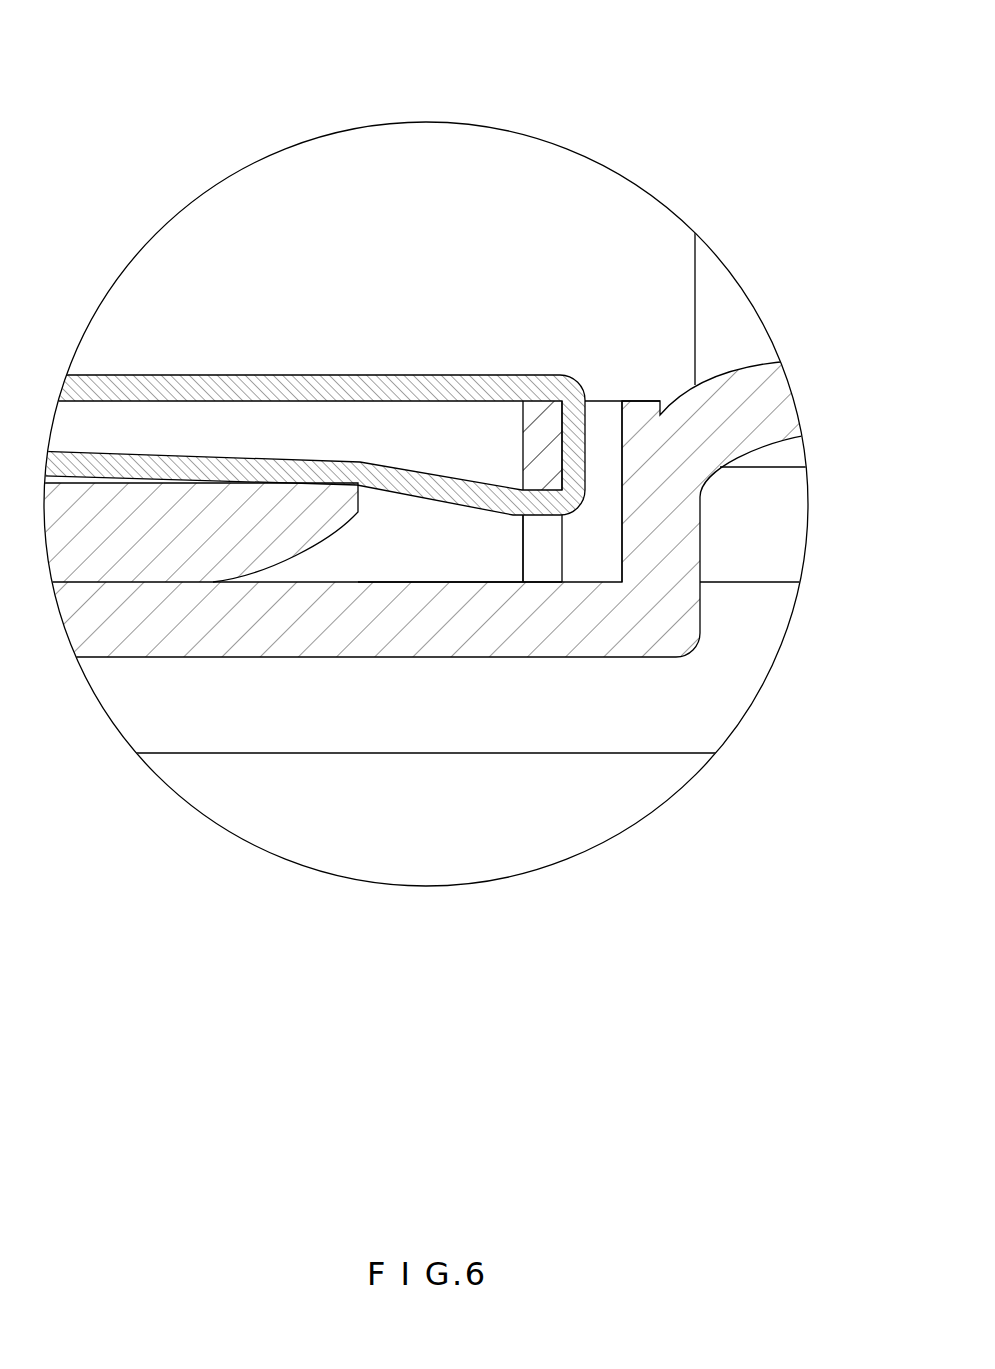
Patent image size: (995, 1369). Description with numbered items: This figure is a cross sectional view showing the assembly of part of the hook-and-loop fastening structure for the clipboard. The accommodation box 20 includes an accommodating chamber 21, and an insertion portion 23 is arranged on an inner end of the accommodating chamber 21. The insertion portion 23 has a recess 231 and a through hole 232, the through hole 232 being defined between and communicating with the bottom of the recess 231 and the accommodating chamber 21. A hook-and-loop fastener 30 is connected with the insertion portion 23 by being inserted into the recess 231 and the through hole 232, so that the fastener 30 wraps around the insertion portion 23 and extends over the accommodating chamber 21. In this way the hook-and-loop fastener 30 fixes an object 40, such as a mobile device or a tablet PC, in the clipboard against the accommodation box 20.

The accommodation box 20 is at (302, 697).
The accommodating chamber 21 is at (425, 540).
The insertion portion 23 is at (542, 432).
The recess 231 is at (603, 460).
The through hole 232 is at (537, 562).
The hook-and-loop fastener 30 is at (305, 390).
The object 40 is at (158, 533).